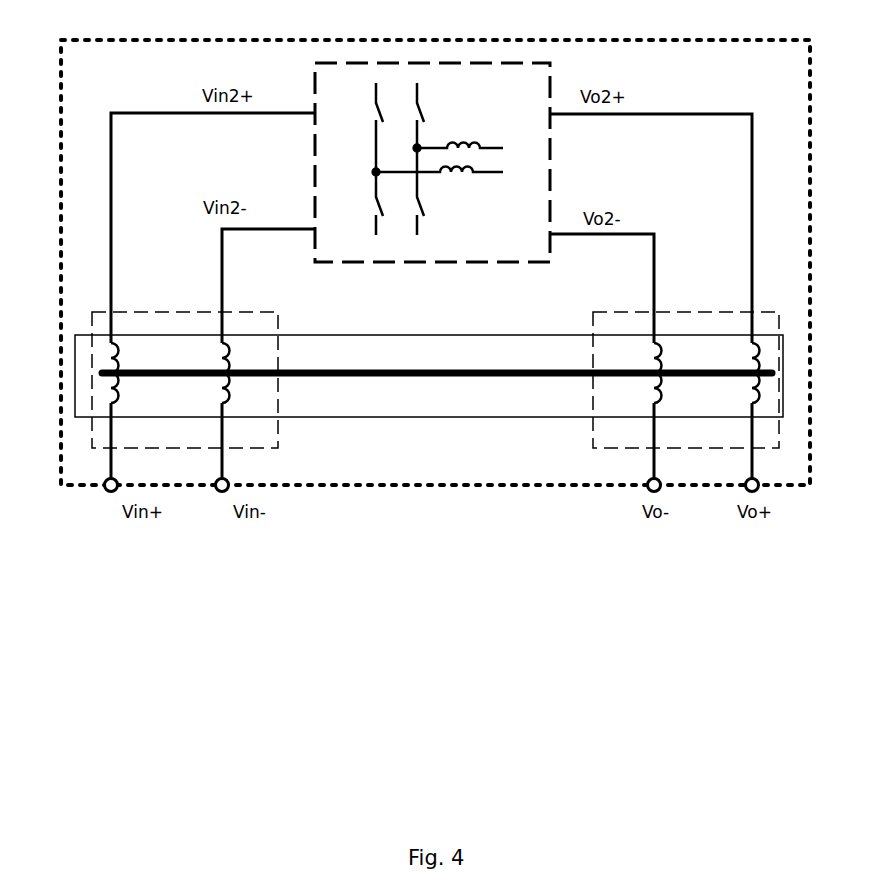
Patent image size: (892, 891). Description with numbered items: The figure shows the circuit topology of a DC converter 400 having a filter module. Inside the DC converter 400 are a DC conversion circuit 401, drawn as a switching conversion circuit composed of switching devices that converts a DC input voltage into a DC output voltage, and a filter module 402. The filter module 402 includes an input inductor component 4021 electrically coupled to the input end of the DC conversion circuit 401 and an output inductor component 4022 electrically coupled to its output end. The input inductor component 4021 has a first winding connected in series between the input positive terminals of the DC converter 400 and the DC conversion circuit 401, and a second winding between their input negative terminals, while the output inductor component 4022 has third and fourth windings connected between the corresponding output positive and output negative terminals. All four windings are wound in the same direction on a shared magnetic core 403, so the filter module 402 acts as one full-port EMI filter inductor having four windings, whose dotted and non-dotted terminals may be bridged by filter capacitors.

The DC converter 400 is at (470, 485).
The DC conversion circuit 401 is at (437, 262).
The filter module 402 is at (429, 371).
The magnetic core 403 is at (375, 373).
The input inductor component 4021 is at (278, 312).
The output inductor component 4022 is at (632, 312).